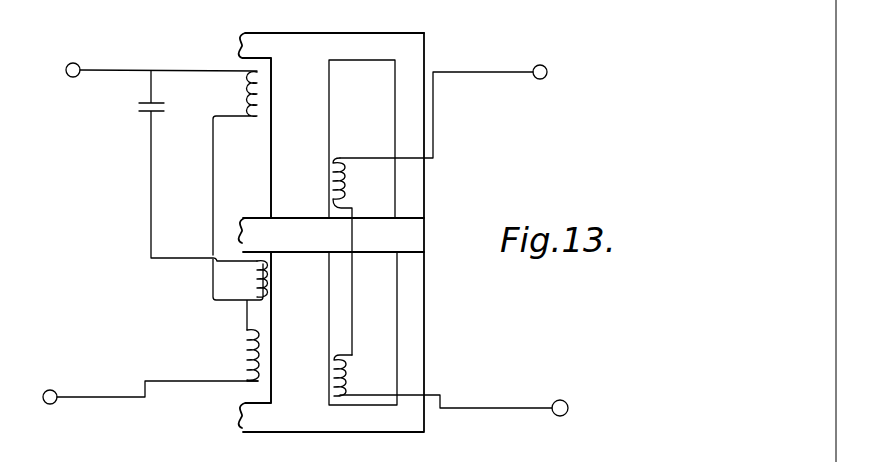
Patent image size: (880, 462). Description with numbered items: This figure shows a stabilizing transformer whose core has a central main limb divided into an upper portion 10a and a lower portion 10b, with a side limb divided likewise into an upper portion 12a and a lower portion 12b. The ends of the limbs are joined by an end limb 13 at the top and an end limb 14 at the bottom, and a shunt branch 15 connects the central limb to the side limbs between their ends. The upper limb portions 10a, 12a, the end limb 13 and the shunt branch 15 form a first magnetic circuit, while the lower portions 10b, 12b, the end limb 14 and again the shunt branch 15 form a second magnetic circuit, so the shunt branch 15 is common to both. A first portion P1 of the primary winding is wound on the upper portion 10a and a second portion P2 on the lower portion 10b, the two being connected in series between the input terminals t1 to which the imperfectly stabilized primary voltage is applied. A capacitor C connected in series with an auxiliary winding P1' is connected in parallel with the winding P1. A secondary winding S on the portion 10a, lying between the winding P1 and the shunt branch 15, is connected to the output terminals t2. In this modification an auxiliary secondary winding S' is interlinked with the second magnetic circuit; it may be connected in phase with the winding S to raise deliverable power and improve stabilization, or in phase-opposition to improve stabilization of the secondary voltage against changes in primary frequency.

The end limb 13 is at (320, 42).
The end limb 14 is at (345, 425).
The shunt branch 15 is at (402, 238).
The upper portion of side limb 12a is at (413, 187).
The lower portion of side limb 12b is at (415, 306).
The upper portion of central limb 10a is at (321, 104).
The lower portion of central limb 10b is at (316, 390).
The input terminals t1 is at (150, 237).
The output terminals t2 is at (454, 239).
The capacitor C is at (183, 166).
The first portion of primary winding P1 is at (230, 163).
The auxiliary winding P1' is at (240, 294).
The second portion of primary winding P2 is at (232, 355).
The secondary winding S is at (349, 256).
The auxiliary secondary winding S' is at (355, 375).